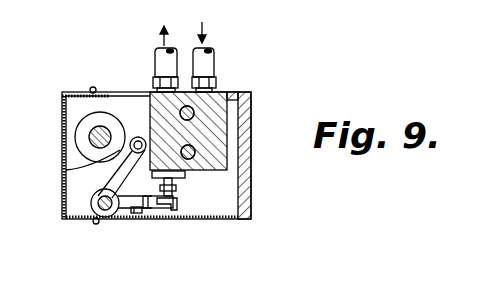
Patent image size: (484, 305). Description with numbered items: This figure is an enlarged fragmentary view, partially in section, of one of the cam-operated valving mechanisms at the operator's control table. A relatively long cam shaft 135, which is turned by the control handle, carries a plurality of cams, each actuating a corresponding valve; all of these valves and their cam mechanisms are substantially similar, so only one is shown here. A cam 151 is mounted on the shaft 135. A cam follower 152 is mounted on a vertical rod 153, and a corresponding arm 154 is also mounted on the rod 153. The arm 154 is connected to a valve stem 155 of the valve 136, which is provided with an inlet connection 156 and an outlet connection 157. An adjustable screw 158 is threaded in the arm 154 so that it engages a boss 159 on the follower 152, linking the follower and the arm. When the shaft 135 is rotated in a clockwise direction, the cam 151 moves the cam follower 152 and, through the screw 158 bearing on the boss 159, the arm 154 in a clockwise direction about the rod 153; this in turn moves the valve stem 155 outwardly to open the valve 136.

The cam shaft 135 is at (90, 136).
The valve 136 is at (213, 128).
The cam 151 is at (93, 155).
The cam follower 152 is at (120, 163).
The vertical rod 153 is at (105, 205).
The arm 154 is at (153, 199).
The valve stem 155 is at (173, 192).
The inlet connection 156 is at (204, 57).
The outlet connection 157 is at (164, 60).
The adjustable screw 158 is at (141, 213).
The boss 159 is at (176, 191).